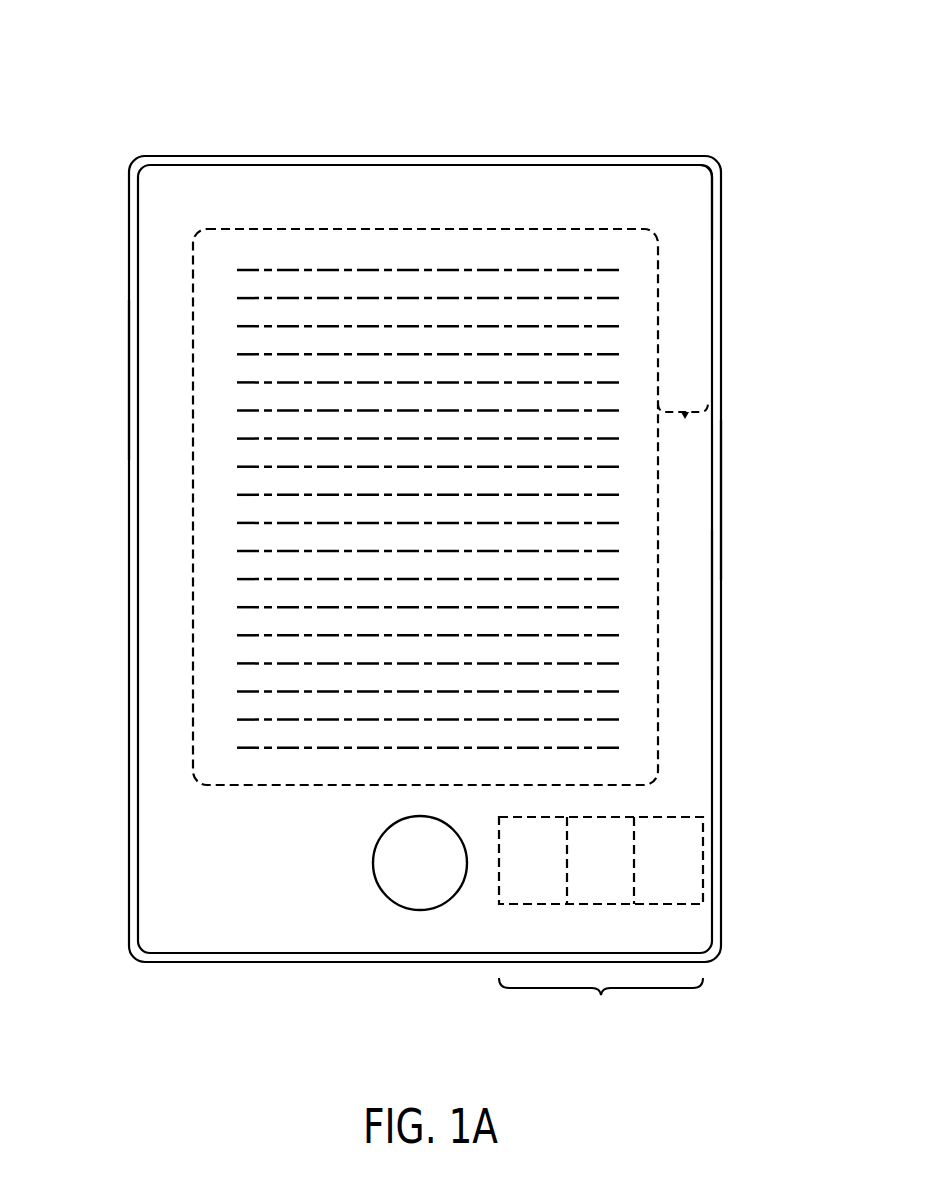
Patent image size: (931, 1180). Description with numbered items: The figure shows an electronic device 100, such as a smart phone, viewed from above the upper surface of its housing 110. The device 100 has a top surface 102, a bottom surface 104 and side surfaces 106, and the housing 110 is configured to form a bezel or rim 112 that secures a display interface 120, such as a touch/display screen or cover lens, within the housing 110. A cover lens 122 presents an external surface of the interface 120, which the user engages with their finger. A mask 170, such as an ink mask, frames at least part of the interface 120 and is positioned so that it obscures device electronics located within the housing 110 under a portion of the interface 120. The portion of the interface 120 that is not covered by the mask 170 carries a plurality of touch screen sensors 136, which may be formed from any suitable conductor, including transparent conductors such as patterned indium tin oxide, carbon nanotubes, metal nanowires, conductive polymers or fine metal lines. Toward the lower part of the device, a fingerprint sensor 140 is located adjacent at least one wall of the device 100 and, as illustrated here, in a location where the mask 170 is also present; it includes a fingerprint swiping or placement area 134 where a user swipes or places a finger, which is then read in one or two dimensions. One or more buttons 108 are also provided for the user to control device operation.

The electronic device 100 is at (424, 518).
The top surface 102 is at (167, 840).
The bottom surface 104 is at (167, 558).
The side surfaces 106 is at (130, 385).
The buttons 108 is at (384, 892).
The housing 110 is at (721, 503).
The bezel or rim 112 is at (713, 605).
The display interface 120 is at (673, 203).
The cover lens 122 is at (517, 187).
The fingerprint placement area 134 is at (601, 1003).
The touch screen sensors 136 is at (617, 298).
The fingerprint sensor 140 is at (685, 815).
The mask 170 is at (683, 425).